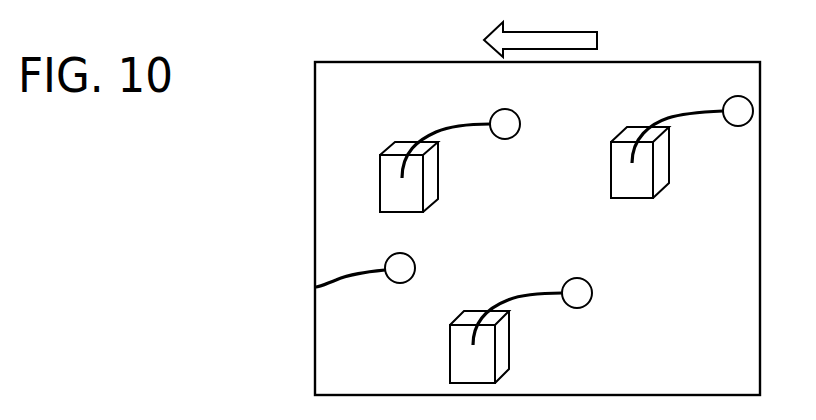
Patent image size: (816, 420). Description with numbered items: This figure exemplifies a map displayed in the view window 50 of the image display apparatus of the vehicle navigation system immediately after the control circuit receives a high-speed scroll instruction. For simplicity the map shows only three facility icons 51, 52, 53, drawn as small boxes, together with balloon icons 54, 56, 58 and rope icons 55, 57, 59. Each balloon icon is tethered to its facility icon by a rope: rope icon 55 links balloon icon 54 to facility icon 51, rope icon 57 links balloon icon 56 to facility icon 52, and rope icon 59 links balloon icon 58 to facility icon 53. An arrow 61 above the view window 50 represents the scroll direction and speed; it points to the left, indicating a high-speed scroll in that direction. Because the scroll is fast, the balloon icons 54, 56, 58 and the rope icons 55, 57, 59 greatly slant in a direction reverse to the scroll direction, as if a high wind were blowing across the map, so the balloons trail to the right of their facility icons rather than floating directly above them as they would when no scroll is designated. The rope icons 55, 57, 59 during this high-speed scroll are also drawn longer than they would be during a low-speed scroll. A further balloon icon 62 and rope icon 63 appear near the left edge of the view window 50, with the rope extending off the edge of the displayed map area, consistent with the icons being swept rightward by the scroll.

The view window 50 is at (292, 79).
The facility icon 51 is at (438, 170).
The facility icon 52 is at (668, 158).
The facility icon 53 is at (510, 340).
The balloon icon 54 is at (495, 113).
The rope icon 55 is at (432, 128).
The balloon icon 56 is at (727, 101).
The rope icon 57 is at (660, 120).
The balloon icon 58 is at (566, 282).
The rope icon 59 is at (505, 300).
The arrow 61 is at (597, 41).
The fourth detection head 62 is at (390, 257).
The fourth cable 63 is at (336, 281).